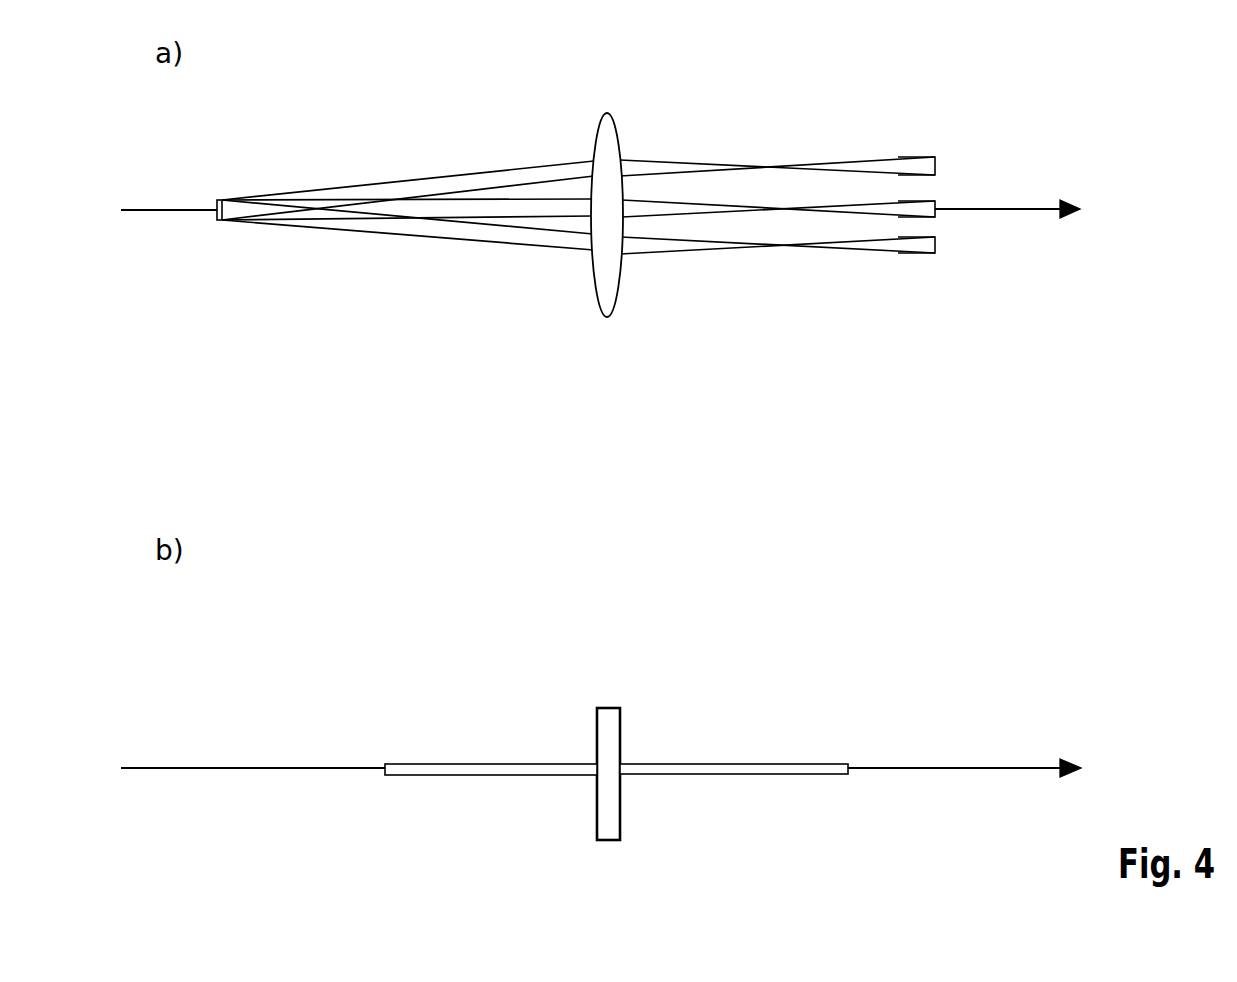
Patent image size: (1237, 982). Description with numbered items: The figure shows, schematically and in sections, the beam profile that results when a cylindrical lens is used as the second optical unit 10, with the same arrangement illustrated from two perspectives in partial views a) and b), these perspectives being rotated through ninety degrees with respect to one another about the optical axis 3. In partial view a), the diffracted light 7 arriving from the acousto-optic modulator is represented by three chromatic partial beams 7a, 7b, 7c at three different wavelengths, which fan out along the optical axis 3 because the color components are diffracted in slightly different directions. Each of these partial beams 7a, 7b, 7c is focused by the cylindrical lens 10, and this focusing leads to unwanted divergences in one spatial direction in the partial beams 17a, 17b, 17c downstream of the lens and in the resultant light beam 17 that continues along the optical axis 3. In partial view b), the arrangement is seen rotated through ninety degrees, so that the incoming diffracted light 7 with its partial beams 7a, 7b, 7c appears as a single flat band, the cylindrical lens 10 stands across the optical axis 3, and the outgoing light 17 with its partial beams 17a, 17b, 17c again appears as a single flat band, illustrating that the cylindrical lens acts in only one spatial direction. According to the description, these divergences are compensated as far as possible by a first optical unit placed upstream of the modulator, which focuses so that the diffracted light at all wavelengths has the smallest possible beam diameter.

The optical axis 3 is at (1037, 213).
The diffracted light 7 is at (472, 766).
The partial beam 7a is at (407, 225).
The partial beam 7b is at (459, 208).
The partial beam 7c is at (516, 176).
The second optical unit 10 is at (607, 728).
The resultant light beam 17 is at (745, 766).
The partial beam 17a is at (871, 246).
The partial beam 17b is at (895, 209).
The partial beam 17c is at (903, 157).